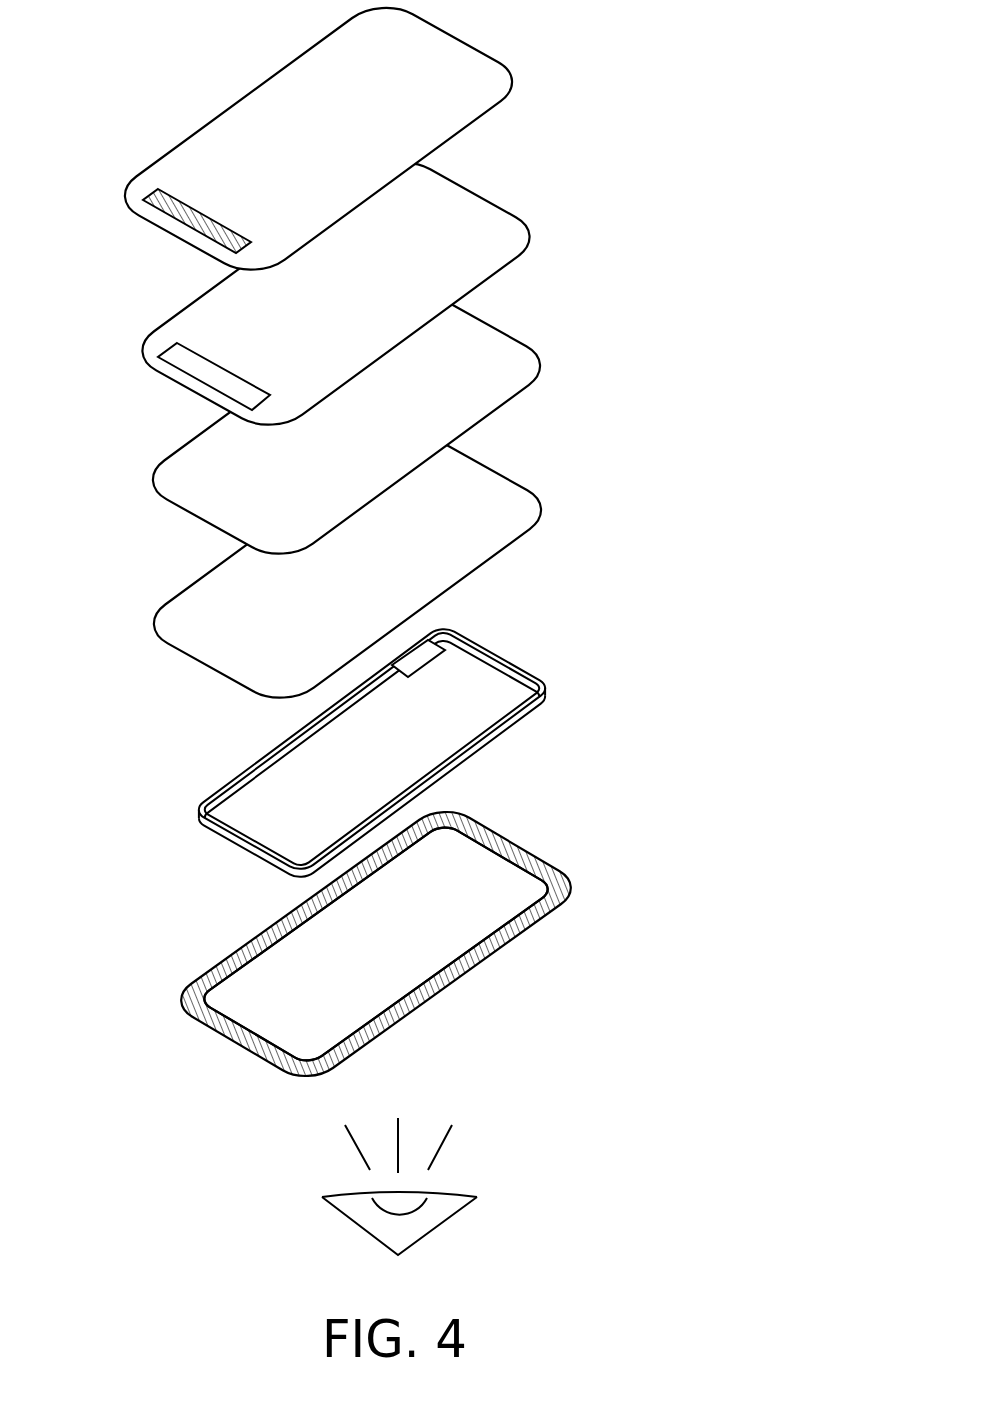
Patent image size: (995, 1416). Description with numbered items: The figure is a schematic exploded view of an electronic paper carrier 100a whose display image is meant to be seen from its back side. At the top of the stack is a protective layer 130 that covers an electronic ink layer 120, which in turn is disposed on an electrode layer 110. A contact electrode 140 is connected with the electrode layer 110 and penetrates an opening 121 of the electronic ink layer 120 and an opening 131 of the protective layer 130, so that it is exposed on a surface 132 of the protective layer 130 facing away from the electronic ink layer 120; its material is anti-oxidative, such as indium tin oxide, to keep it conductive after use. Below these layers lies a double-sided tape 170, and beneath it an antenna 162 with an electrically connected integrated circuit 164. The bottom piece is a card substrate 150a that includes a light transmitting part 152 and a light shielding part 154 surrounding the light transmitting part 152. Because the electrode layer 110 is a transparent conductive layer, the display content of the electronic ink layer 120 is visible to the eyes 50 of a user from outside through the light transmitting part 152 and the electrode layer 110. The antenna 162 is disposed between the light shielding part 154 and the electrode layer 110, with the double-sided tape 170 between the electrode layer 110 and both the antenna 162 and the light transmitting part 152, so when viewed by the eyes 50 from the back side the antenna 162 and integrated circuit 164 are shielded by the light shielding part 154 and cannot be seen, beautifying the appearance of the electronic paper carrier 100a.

The eyes 50 is at (430, 1215).
The electronic paper carrier 100a is at (725, 1229).
The electrode layer 110 is at (490, 397).
The electronic ink layer 120 is at (355, 294).
The opening 121 is at (236, 375).
The protective layer 130 is at (326, 139).
The opening 131 is at (219, 221).
The surface 132 is at (196, 165).
The contact electrode 140 is at (160, 227).
The card substrate 150a is at (389, 944).
The light transmitting part 152 is at (375, 944).
The light shielding part 154 is at (480, 960).
The antenna 162 is at (391, 729).
The integrated circuit 164 is at (435, 643).
The double-sided tape 170 is at (490, 543).